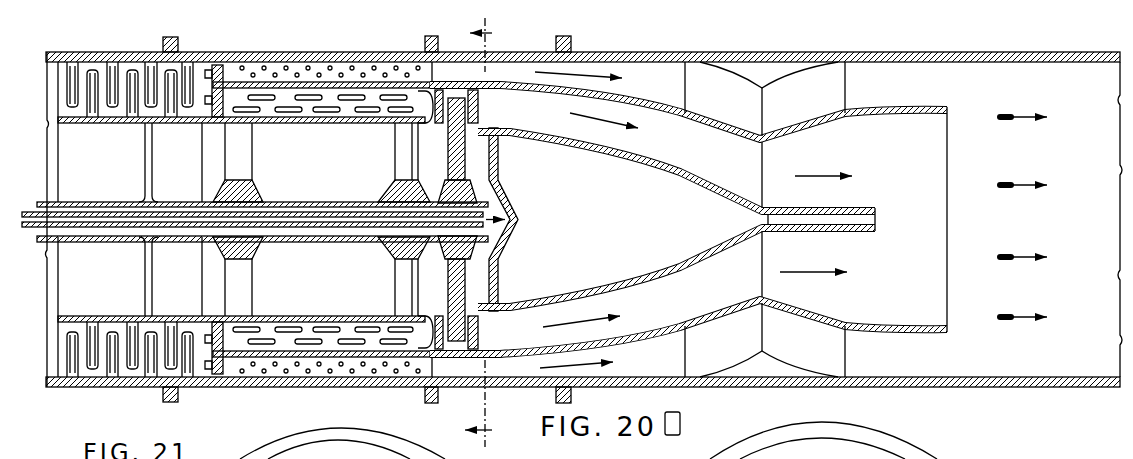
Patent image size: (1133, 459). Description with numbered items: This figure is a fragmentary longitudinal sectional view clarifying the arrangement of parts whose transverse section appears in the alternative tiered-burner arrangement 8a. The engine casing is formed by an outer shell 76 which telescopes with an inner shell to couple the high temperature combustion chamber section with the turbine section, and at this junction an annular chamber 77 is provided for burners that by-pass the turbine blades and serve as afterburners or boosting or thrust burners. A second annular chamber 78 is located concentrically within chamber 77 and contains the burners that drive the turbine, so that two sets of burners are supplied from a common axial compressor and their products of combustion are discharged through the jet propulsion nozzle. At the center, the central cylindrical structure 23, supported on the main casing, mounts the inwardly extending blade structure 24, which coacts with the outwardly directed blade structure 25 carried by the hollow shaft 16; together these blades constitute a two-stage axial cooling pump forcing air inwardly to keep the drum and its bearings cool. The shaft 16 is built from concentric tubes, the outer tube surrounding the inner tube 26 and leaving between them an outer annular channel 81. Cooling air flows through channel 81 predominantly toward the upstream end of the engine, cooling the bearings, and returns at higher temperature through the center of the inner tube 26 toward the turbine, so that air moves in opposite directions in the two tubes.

The outer shell 76 is at (292, 52).
The annular chamber 77 is at (358, 53).
The annular chamber 78 is at (345, 112).
The hollow shaft 16 is at (242, 400).
The outer annular channel 81 is at (352, 232).
The inwardly extending blade structure 24 is at (480, 111).
The central cylindrical structure 23 is at (463, 360).
The outwardly directed blade structure 25 is at (456, 158).
The inner tube 26 is at (487, 214).
The section line 8a is at (492, 236).